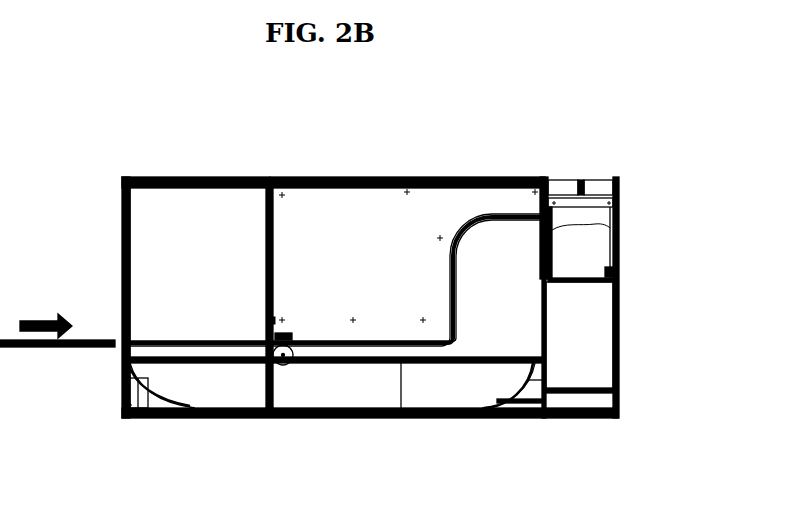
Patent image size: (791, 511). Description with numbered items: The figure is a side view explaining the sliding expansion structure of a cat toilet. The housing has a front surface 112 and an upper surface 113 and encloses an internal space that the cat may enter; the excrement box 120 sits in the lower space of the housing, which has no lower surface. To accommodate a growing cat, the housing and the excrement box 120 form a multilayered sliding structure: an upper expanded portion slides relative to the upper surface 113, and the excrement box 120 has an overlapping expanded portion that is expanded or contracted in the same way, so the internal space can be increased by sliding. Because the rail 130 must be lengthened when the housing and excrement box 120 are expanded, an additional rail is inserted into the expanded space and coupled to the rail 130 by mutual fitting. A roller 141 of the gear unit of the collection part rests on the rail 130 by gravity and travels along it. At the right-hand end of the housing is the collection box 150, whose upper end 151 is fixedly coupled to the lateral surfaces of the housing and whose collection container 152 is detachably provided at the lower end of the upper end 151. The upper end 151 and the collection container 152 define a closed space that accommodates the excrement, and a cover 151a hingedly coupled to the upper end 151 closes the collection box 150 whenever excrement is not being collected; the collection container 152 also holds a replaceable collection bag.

The front surface 112 is at (122, 206).
The upper surface 113 is at (343, 177).
The excrement box 120 is at (150, 390).
The rail 130 is at (412, 352).
The roller 141 is at (278, 366).
The collection box 150 is at (630, 297).
The upper end 151 is at (621, 239).
The cover 151a is at (620, 228).
The collection container 152 is at (613, 337).